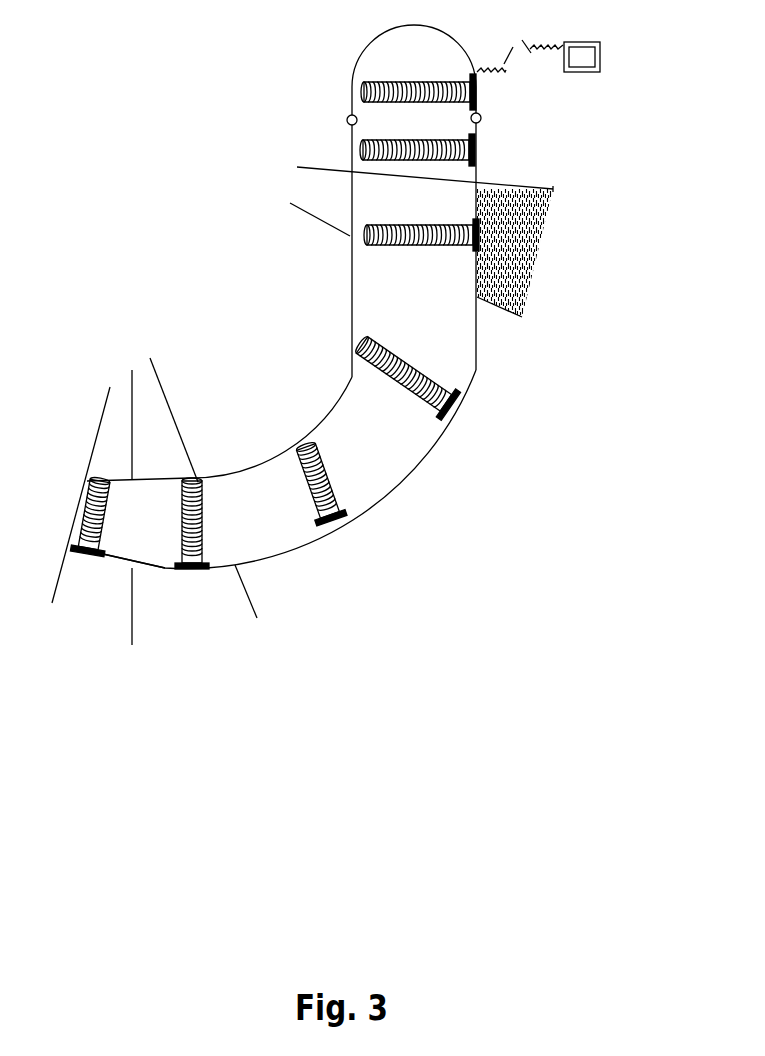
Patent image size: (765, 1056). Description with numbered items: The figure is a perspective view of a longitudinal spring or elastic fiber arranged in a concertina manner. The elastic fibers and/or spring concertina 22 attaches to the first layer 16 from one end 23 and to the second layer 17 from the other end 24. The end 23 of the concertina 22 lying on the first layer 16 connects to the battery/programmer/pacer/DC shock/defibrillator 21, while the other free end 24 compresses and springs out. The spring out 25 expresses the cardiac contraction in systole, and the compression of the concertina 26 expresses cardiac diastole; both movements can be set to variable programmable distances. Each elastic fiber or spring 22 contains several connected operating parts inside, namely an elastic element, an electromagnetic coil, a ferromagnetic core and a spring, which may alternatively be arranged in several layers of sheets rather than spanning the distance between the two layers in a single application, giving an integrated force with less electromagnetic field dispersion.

The layer 1 16 is at (482, 118).
The layer 2 17 is at (345, 120).
The battery/programmer/pacer/DC shock/defibrillator 21 is at (576, 57).
The elastic fibers and/or spring concertina 22 is at (431, 80).
The end of concertina on layer 1 23 is at (477, 91).
The free end of concertina on layer 2 24 is at (364, 92).
The spring out 25 is at (512, 238).
The compression of the concertina 26 is at (233, 578).